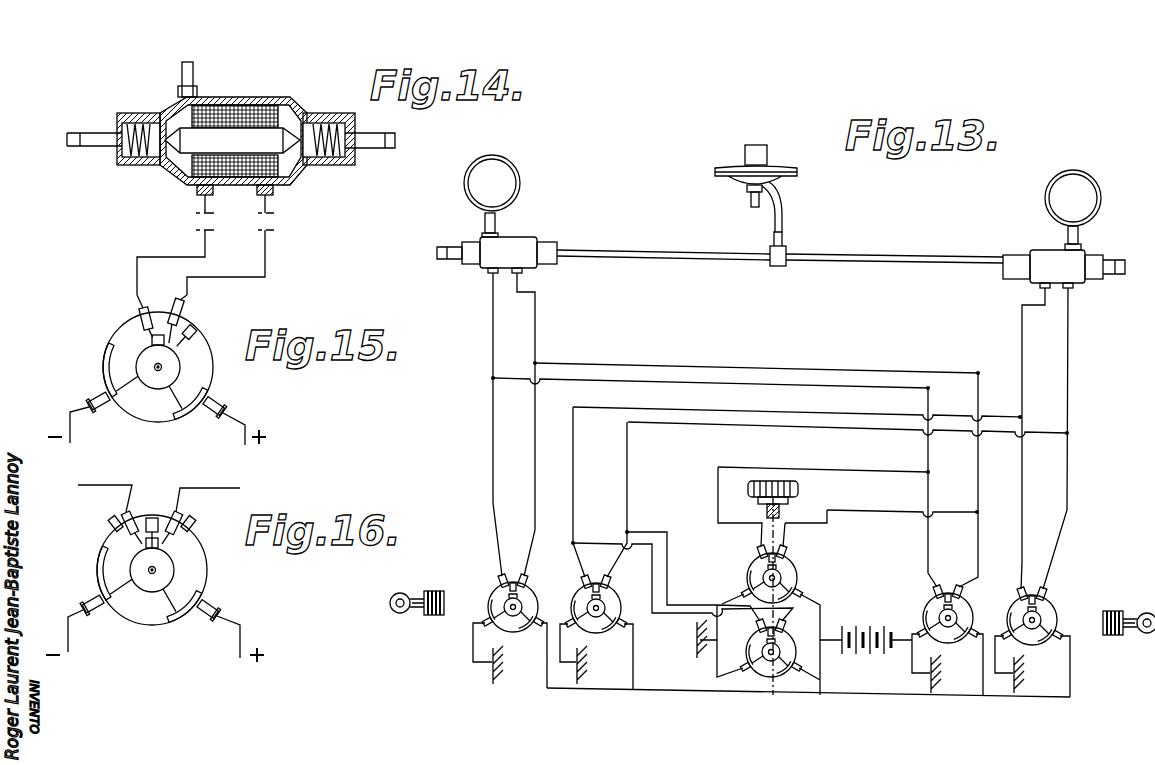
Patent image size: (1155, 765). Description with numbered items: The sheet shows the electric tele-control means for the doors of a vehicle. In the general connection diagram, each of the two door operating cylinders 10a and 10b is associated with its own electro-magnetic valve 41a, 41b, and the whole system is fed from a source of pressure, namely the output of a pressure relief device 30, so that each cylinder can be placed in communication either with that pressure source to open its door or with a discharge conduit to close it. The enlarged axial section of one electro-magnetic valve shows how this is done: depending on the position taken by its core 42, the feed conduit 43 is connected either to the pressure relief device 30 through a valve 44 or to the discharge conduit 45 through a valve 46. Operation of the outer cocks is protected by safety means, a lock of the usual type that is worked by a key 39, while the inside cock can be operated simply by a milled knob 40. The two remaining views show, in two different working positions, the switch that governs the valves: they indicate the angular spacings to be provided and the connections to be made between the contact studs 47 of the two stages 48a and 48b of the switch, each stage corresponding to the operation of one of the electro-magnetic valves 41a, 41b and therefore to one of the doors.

In FIG. 13, the door operating cylinder 10a is at (508, 174).
In FIG. 13, the door operating cylinder 10b is at (1086, 190).
In FIG. 13, the pressure relief device 30 is at (778, 170).
In FIG. 13, the key 39 is at (432, 595).
In FIG. 13, the milled knob 40 is at (798, 490).
In FIG. 14, the electro-magnetic valve 41a is at (232, 98).
In FIG. 13, the electro-magnetic valve 41a is at (518, 247).
In FIG. 13, the electro-magnetic valve 41b is at (1072, 265).
In FIG. 14, the core 42 is at (252, 132).
In FIG. 14, the feed conduit 43 is at (182, 75).
In FIG. 14, the valve 44 is at (158, 165).
In FIG. 14, the discharge conduit 45 is at (378, 144).
In FIG. 14, the valve 46 is at (300, 140).
In FIG. 15, the contact studs 47 is at (190, 332).
In FIG. 16, the contact studs 47 is at (126, 530).
In FIG. 15, the switch stage 48a is at (198, 373).
In FIG. 13, the switch stage 48a is at (510, 622).
In FIG. 16, the switch stage 48b is at (190, 563).
In FIG. 13, the switch stage 48b is at (594, 624).